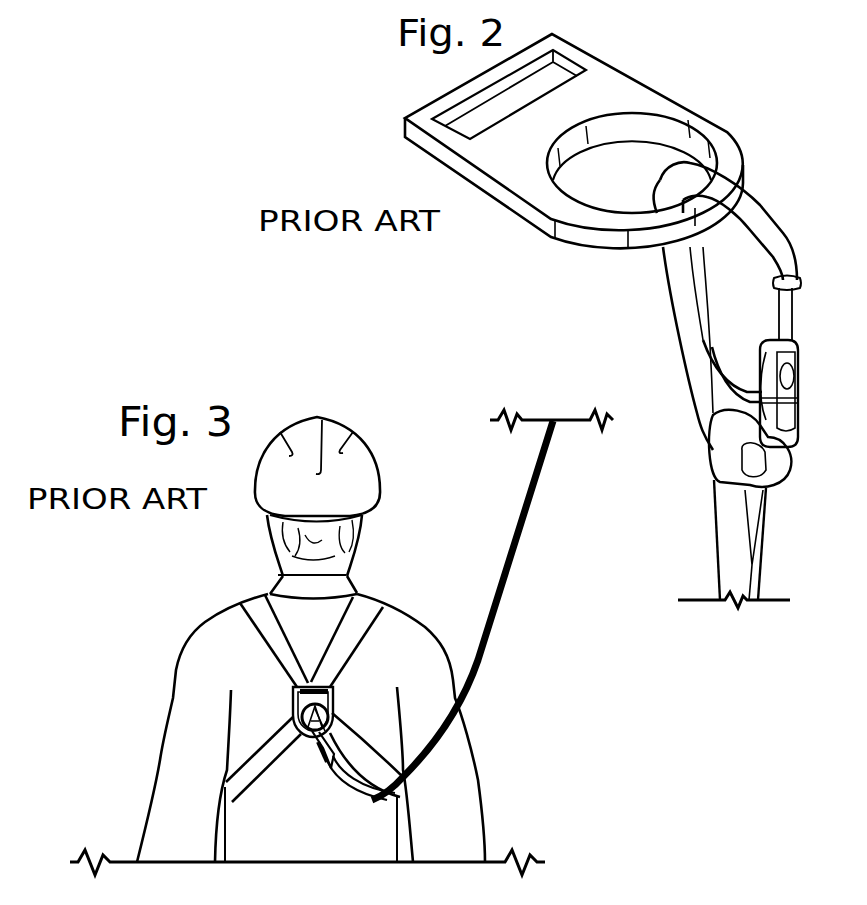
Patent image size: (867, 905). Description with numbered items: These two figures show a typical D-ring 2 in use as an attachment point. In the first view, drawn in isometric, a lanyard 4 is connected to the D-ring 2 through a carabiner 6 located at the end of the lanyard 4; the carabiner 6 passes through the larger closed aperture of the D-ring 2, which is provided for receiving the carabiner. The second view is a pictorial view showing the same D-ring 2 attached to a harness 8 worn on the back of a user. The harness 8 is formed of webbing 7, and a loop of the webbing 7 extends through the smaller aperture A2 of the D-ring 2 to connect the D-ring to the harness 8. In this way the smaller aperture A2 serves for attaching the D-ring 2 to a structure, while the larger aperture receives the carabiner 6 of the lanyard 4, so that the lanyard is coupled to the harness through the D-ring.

In FIG. 2, the D-ring 2 is at (685, 64).
In FIG. 3, the D-ring 2 is at (283, 701).
In FIG. 2, the lanyard 4 is at (780, 538).
In FIG. 3, the lanyard 4 is at (524, 535).
In FIG. 2, the carabiner 6 is at (788, 203).
In FIG. 3, the webbing 7 is at (258, 610).
In FIG. 3, the harness 8 is at (350, 706).
In FIG. 3, the aperture A2 is at (302, 689).